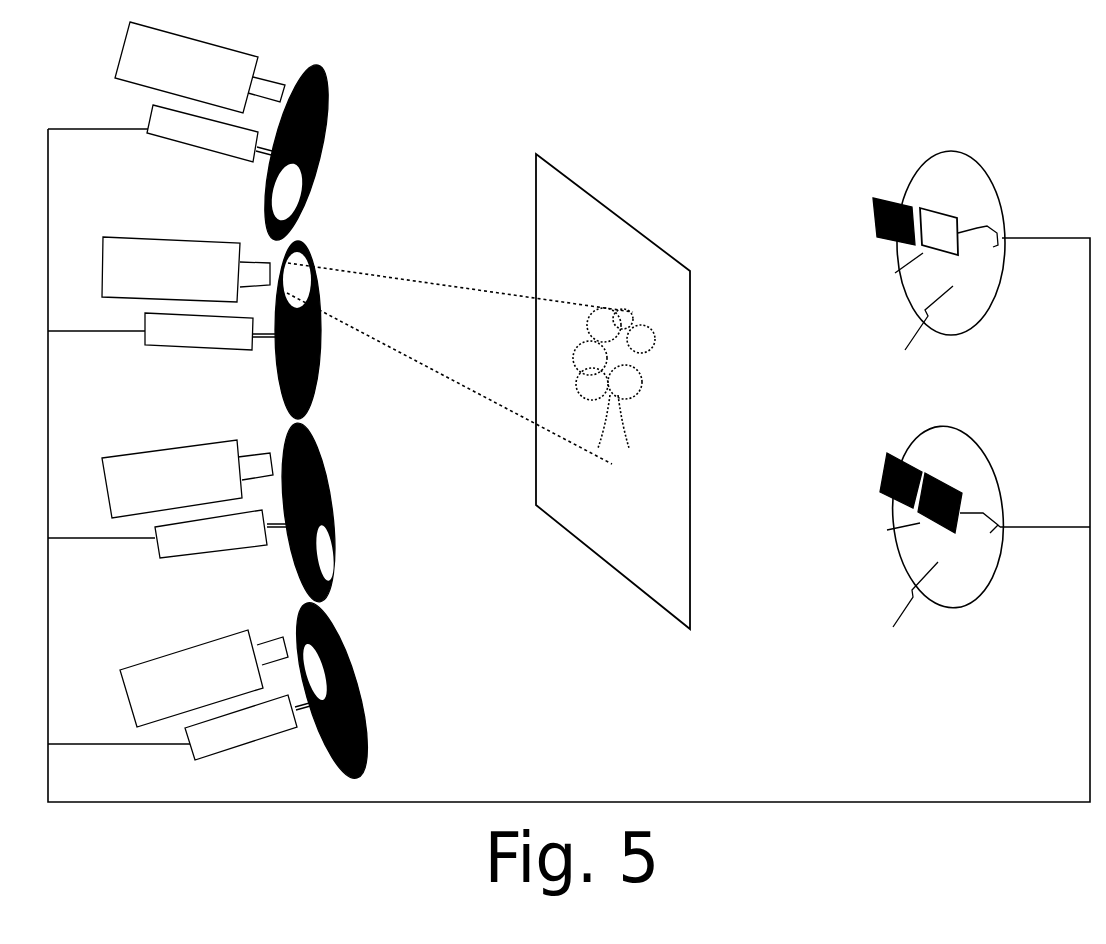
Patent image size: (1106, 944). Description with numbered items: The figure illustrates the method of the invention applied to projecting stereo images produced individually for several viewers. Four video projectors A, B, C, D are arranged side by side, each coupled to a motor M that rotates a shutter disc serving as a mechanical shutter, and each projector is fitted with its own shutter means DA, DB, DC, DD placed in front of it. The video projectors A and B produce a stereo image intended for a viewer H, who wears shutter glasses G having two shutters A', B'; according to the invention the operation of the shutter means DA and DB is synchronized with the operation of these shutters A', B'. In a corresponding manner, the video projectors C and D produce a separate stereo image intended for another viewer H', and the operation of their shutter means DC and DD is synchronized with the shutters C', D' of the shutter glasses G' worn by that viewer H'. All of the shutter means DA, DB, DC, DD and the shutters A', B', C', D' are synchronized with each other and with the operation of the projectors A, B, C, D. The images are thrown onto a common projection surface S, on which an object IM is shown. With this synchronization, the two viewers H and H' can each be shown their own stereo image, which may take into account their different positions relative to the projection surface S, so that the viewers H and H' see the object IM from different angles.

The video projector A is at (200, 67).
The video projector B is at (186, 269).
The video projector C is at (187, 479).
The video projector D is at (204, 678).
The motor M is at (229, 432).
The shutter means DA is at (332, 77).
The shutter means DB is at (317, 377).
The shutter means DC is at (327, 470).
The shutter means DD is at (368, 747).
The projection surface S is at (613, 391).
The object IM is at (614, 378).
The shutter glasses G is at (978, 240).
The shutter A' is at (910, 187).
The shutter B' is at (967, 178).
The viewer H is at (912, 333).
The shutter glasses G' is at (978, 517).
The shutter C' is at (939, 440).
The shutter D' is at (986, 473).
The viewer H' is at (898, 608).